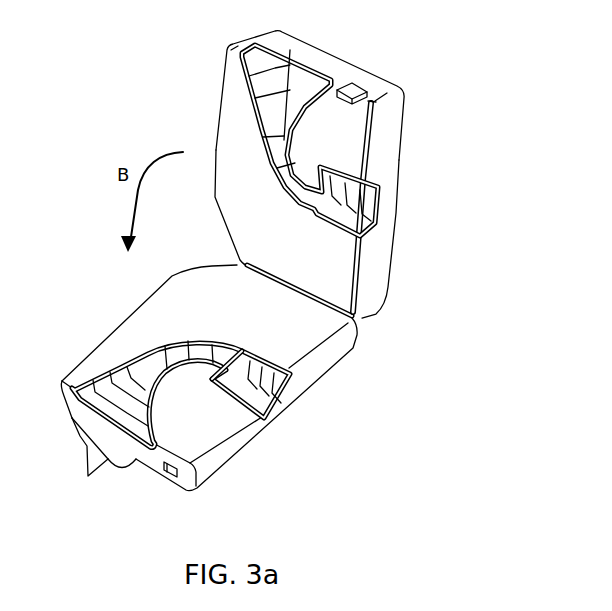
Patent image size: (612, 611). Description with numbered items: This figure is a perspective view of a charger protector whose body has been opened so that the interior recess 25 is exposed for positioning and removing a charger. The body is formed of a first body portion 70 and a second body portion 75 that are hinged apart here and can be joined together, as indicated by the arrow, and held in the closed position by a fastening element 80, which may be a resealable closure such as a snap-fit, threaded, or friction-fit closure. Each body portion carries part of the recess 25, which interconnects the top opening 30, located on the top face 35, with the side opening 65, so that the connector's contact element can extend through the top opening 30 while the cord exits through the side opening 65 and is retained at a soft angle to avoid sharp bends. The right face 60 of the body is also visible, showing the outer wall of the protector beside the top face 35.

The recess 25 is at (258, 88).
The top opening 30 is at (387, 180).
The top face 35 is at (373, 290).
The right face 60 is at (385, 78).
The side opening 65 is at (88, 477).
The first body portion 70 is at (333, 292).
The second body portion 75 is at (285, 342).
The fastening element 80 is at (362, 82).